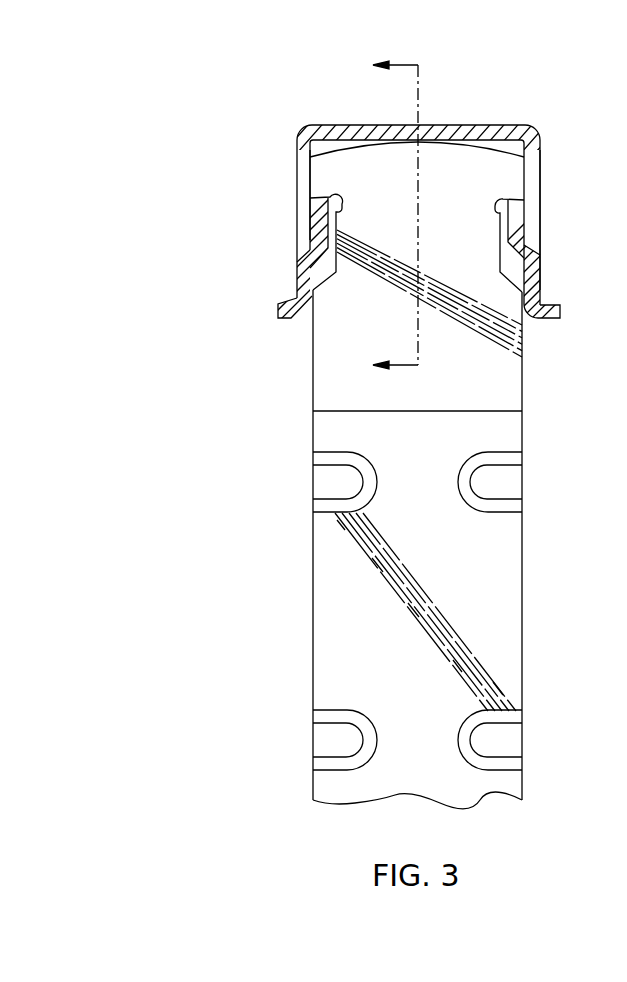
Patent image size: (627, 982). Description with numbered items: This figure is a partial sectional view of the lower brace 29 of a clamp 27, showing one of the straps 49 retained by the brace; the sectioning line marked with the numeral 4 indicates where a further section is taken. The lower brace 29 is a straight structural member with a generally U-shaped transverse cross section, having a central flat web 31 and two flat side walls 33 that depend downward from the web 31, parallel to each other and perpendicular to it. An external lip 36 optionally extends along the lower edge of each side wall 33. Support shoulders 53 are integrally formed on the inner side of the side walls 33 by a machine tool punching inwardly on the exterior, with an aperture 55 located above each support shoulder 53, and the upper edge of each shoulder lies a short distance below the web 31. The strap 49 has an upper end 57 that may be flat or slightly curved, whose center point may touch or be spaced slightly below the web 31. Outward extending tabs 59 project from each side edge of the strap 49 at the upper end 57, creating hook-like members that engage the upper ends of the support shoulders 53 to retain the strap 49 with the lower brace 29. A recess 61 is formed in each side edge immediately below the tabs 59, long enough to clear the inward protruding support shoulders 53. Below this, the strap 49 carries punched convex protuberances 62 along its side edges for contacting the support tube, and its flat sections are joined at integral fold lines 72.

The clamp 27 is at (236, 101).
The lower brace 29 is at (527, 124).
The web 31 is at (462, 125).
The strap upper end 57 is at (412, 127).
The tab 59 is at (310, 172).
The aperture 55 is at (540, 166).
The side wall 33 is at (297, 287).
The external lip 36 is at (279, 309).
The support shoulder 53 is at (516, 224).
The recess 61 is at (508, 264).
The strap 49 is at (328, 430).
The fold line 72 is at (492, 411).
The protuberance 62 is at (330, 486).
The section line 4- 4 is at (383, 218).